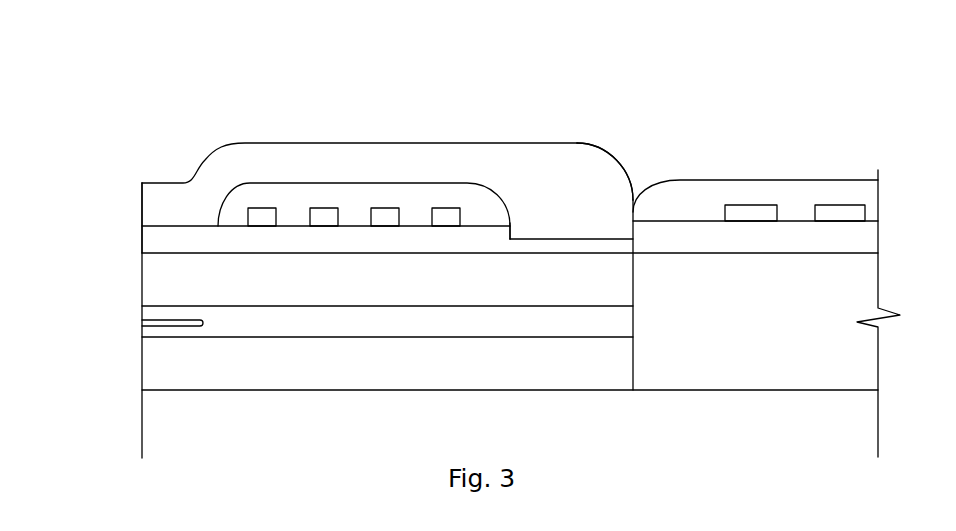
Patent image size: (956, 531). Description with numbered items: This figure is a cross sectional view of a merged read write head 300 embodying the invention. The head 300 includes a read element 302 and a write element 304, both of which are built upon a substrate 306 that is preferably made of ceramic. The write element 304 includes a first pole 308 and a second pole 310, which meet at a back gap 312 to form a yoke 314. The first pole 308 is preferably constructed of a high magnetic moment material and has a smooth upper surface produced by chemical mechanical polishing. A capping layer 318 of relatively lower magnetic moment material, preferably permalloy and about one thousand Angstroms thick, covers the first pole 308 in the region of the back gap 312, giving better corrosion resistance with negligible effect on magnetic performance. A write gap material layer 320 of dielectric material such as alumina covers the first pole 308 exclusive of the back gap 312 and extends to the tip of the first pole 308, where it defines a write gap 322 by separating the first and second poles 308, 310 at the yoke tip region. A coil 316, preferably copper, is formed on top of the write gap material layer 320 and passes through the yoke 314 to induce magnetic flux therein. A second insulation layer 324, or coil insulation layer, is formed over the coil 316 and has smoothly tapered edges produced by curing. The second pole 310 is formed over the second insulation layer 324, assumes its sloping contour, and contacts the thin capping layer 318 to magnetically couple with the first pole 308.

The merged read write head 300 is at (560, 80).
The read element 302 is at (130, 255).
The write element 304 is at (80, 163).
The substrate 306 is at (175, 423).
The first pole 308 is at (615, 293).
The second pole 310 is at (423, 155).
The back gap 312 is at (588, 217).
The yoke 314 is at (602, 142).
The coil 316 is at (323, 208).
The capping layer 318 is at (563, 243).
The write gap material layer 320 is at (310, 242).
The write gap 322 is at (157, 237).
The second insulation layer 324 is at (399, 198).